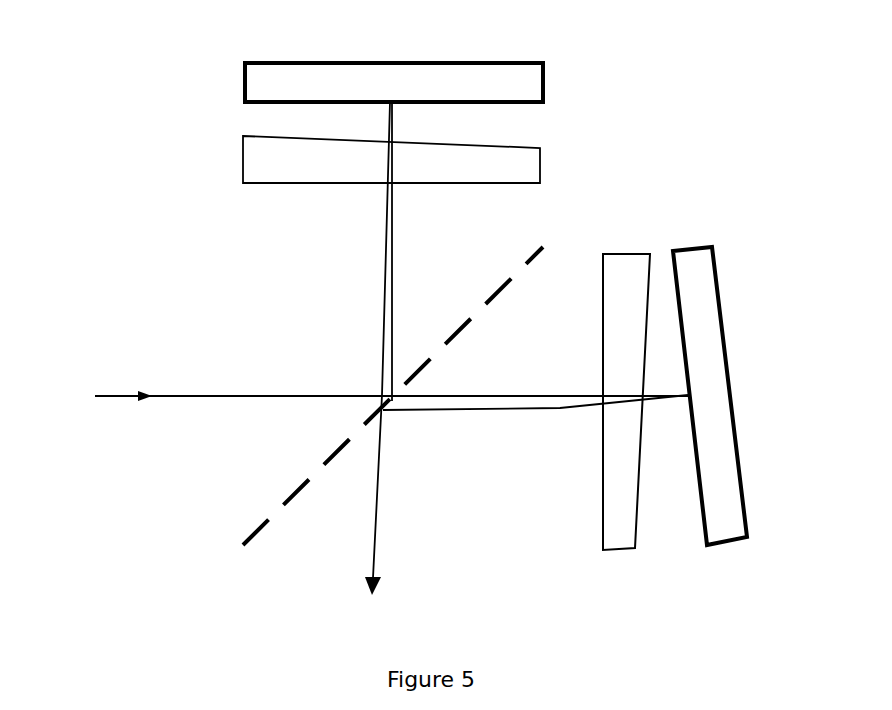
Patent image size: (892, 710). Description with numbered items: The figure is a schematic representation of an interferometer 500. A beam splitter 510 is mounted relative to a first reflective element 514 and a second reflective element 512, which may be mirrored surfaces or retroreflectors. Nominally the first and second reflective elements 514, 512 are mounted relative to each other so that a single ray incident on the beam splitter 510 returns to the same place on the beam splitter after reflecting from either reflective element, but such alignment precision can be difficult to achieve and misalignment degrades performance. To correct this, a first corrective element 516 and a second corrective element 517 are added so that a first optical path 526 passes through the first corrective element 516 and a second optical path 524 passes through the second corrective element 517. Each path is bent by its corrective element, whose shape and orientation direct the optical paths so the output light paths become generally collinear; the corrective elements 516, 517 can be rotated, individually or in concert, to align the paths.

The interferometer 500 is at (110, 309).
The beam splitter 510 is at (243, 537).
The second reflective element 512 is at (243, 83).
The first reflective element 514 is at (702, 247).
The first corrective element 516 is at (623, 254).
The second corrective element 517 is at (243, 158).
The second optical path 524 is at (393, 250).
The first optical path 526 is at (552, 395).